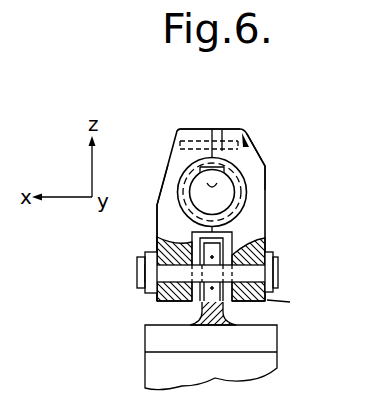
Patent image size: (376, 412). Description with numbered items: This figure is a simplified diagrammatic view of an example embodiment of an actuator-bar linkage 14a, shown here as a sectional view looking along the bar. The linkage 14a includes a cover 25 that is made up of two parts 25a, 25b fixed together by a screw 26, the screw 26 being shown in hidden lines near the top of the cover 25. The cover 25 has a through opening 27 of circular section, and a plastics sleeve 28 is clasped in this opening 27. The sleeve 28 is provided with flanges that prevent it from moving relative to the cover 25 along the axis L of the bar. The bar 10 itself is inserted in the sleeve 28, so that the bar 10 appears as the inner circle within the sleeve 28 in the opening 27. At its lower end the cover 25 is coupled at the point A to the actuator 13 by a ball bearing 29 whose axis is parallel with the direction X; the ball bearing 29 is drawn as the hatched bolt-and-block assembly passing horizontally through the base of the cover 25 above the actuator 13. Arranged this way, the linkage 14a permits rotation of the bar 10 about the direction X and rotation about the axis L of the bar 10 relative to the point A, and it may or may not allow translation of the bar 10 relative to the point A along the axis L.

The bar 10 is at (226, 193).
The actuator 13 is at (136, 351).
The linkage 14a is at (178, 118).
The cover 25 is at (160, 147).
The part of cover 25a is at (155, 217).
The part of cover 25b is at (257, 160).
The screw 26 is at (252, 134).
The through opening 27 is at (222, 128).
The plastics sleeve 28 is at (243, 216).
The ball bearing 29 is at (157, 303).
The point A is at (290, 302).